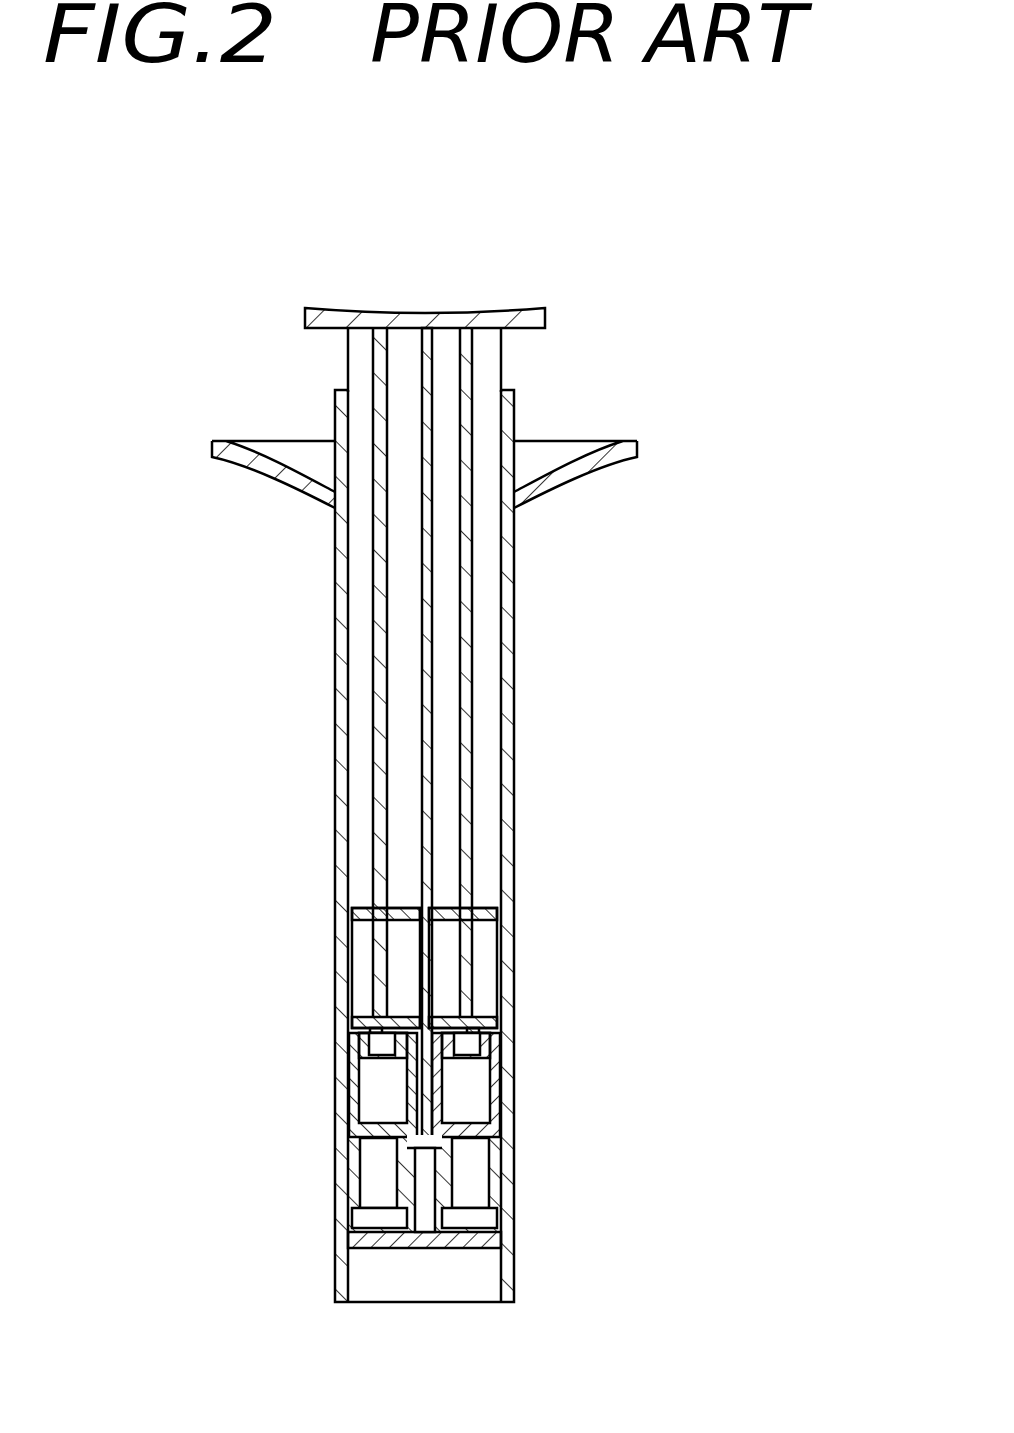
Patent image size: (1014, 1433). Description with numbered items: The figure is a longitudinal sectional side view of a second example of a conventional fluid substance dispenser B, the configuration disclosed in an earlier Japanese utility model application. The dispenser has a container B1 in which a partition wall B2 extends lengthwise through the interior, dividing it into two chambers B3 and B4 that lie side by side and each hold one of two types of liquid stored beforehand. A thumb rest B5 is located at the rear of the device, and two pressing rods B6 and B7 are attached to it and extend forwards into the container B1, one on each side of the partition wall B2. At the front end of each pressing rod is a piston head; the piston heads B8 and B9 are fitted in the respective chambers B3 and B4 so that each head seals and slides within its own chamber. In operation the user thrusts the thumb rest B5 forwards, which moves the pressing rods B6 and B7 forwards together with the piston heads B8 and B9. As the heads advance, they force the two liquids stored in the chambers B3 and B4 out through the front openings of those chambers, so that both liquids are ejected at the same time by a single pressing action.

The conventional fluid substance dispenser B is at (530, 740).
The container B1 is at (512, 738).
The partition wall B2 is at (432, 587).
The chamber B3 is at (472, 1181).
The chamber B4 is at (380, 1187).
The thumb rest B5 is at (510, 305).
The pressing rod B6 is at (467, 848).
The pressing rod B7 is at (373, 698).
The piston head B8 is at (499, 1055).
The piston head B9 is at (349, 1075).